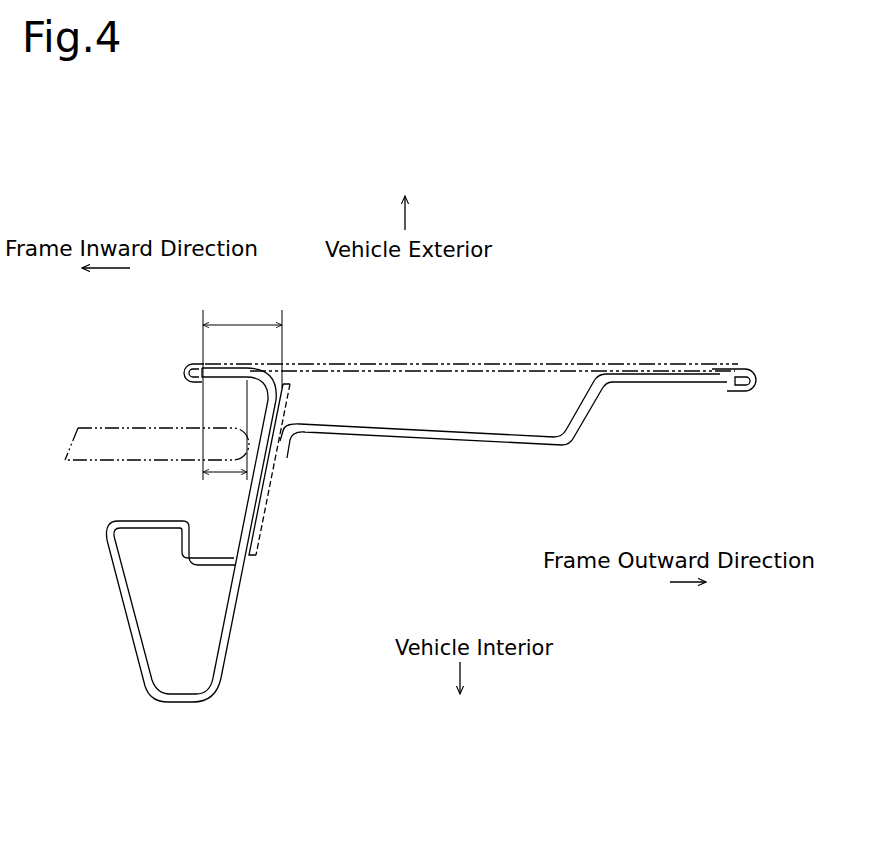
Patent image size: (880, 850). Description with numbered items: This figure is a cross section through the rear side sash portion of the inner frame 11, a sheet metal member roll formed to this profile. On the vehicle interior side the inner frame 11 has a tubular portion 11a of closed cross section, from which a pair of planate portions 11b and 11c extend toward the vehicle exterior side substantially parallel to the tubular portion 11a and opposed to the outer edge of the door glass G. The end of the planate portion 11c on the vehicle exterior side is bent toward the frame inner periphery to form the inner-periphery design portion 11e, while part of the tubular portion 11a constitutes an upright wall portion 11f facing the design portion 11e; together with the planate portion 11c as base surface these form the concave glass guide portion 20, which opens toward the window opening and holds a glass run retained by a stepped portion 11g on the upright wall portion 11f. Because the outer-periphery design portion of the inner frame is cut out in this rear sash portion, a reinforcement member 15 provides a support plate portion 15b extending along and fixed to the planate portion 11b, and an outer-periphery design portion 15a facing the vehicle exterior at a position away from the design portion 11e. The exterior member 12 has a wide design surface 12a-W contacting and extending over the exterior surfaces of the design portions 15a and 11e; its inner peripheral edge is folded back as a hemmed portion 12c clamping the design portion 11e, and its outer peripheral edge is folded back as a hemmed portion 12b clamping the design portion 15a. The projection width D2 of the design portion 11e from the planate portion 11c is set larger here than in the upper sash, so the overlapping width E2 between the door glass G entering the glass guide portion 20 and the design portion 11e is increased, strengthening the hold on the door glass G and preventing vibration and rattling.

The inner frame 11 is at (221, 550).
The tubular portion 11a is at (134, 652).
The planate portion 11b is at (268, 472).
The planate portion 11c is at (254, 501).
The inner-periphery design portion 11e is at (249, 378).
The upright wall portion 11f is at (167, 520).
The stepped portion 11g is at (193, 540).
The exterior member 12 is at (439, 372).
The wide design surface 12a-W is at (492, 357).
The hemmed portion 12b is at (727, 392).
The hemmed portion 12c is at (188, 381).
The reinforcement member 15 is at (493, 433).
The outer-periphery design portion 15a is at (726, 378).
The support plate portion 15b is at (280, 541).
The glass guide portion 20 is at (152, 483).
The door glass G is at (117, 440).
The width D2 is at (242, 390).
The overlapping width E2 is at (225, 439).